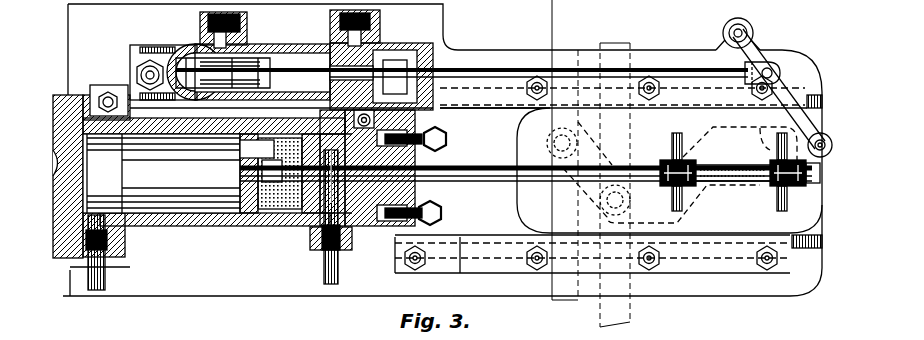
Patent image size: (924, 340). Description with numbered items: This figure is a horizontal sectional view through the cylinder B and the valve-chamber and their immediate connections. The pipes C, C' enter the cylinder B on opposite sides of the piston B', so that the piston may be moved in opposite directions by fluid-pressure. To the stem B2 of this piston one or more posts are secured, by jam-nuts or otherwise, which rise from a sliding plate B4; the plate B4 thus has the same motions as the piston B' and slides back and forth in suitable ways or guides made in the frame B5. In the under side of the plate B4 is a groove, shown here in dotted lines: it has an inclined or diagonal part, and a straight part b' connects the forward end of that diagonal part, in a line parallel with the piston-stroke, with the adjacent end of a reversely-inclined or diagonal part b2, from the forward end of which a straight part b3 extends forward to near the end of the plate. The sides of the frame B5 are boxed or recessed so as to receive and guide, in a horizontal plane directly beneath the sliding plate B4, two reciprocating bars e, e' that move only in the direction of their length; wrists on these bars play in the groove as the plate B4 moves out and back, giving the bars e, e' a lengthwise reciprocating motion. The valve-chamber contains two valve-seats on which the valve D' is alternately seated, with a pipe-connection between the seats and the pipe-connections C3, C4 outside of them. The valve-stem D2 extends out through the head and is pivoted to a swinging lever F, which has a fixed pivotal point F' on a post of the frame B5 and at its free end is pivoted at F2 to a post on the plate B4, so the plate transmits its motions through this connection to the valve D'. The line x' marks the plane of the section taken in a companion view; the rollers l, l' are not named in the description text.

The cylinder B is at (199, 171).
The piston B' is at (280, 173).
The piston stem B2 is at (526, 164).
The sliding plate B4 is at (608, 190).
The frame B5 is at (600, 173).
The pipe C is at (100, 253).
The pipe C' is at (334, 217).
The pipe-connection C3 is at (383, 18).
The pipe-connection C4 is at (224, 27).
The valve D' is at (281, 65).
The valve-stem D2 is at (462, 65).
The swinging lever F is at (779, 89).
The fixed pivotal point F' is at (743, 33).
The pivot F2 is at (832, 145).
The roller l is at (562, 144).
The roller l' is at (625, 200).
The straight groove part b' is at (683, 172).
The reversely-inclined groove part b2 is at (733, 161).
The straight groove part b3 is at (780, 172).
The reciprocating bar e is at (615, 185).
The reciprocating bar e' is at (564, 23).
The section line x' is at (562, 165).